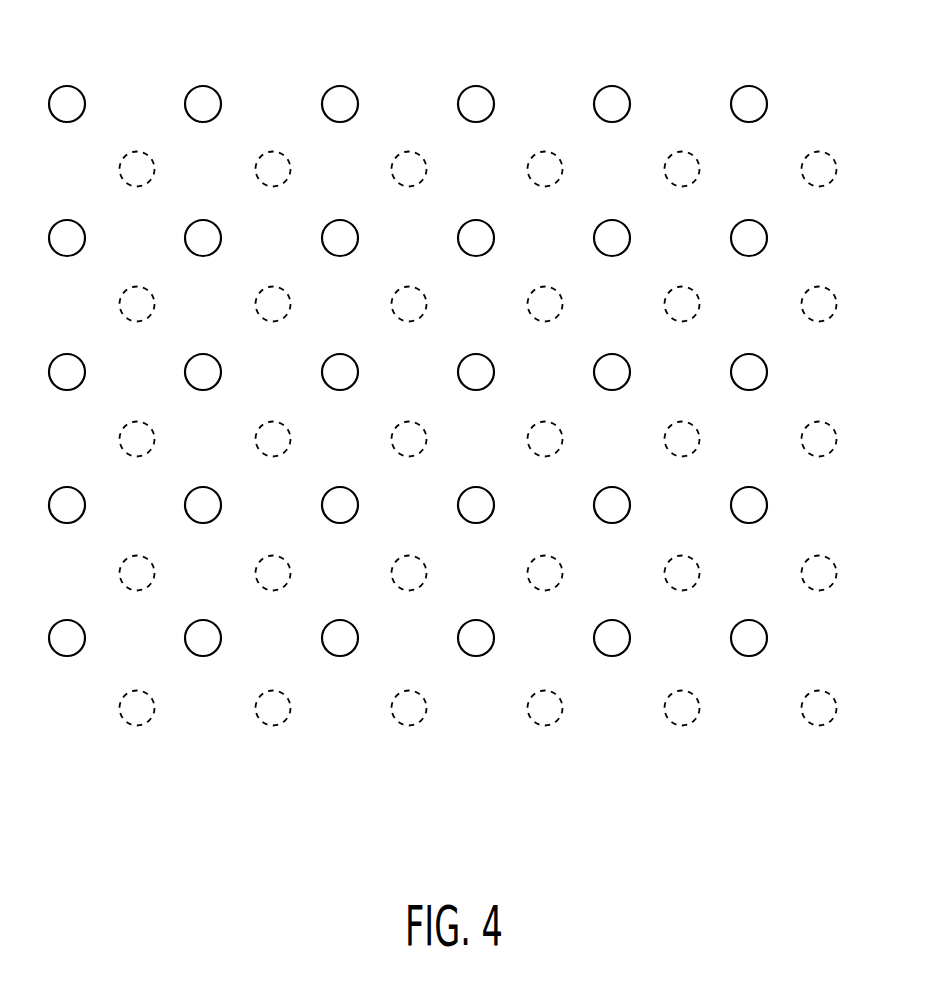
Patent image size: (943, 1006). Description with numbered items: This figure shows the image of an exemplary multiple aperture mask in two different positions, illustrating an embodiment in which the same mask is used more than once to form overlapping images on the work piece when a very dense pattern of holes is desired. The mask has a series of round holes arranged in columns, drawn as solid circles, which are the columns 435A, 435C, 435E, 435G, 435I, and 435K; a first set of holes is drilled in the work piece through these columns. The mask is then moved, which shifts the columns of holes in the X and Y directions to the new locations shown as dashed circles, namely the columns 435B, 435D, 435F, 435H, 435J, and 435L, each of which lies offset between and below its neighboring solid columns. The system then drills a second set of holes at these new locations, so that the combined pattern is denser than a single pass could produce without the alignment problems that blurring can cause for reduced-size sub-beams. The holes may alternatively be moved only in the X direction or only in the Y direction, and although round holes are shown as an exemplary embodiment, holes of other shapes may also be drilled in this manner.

The column of holes 435A is at (69, 78).
The column of holes 435B is at (140, 738).
The column of holes 435C is at (205, 78).
The column of holes 435D is at (276, 738).
The column of holes 435E is at (342, 78).
The column of holes 435F is at (412, 738).
The column of holes 435G is at (478, 78).
The column of holes 435H is at (548, 738).
The column of holes 435I is at (614, 78).
The column of holes 435J is at (685, 738).
The column of holes 435K is at (751, 78).
The column of holes 435L is at (822, 738).